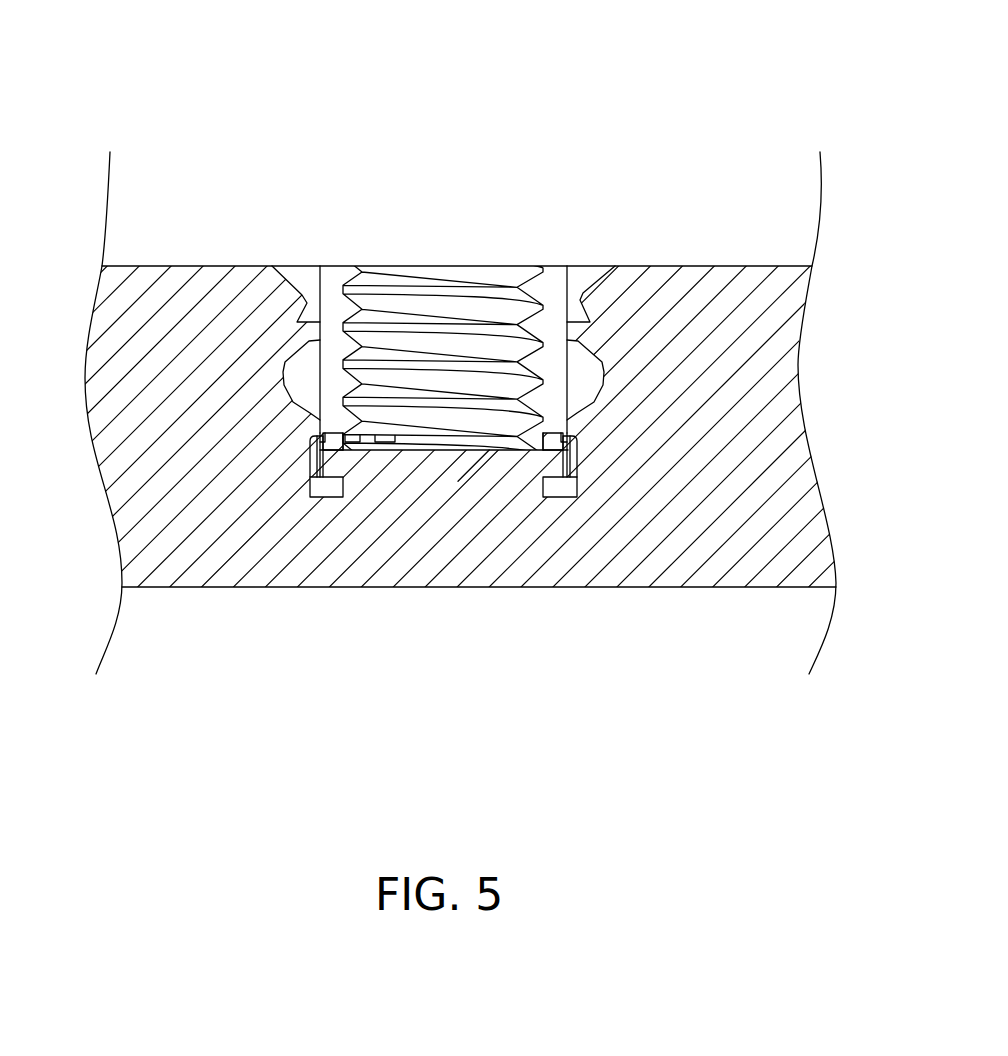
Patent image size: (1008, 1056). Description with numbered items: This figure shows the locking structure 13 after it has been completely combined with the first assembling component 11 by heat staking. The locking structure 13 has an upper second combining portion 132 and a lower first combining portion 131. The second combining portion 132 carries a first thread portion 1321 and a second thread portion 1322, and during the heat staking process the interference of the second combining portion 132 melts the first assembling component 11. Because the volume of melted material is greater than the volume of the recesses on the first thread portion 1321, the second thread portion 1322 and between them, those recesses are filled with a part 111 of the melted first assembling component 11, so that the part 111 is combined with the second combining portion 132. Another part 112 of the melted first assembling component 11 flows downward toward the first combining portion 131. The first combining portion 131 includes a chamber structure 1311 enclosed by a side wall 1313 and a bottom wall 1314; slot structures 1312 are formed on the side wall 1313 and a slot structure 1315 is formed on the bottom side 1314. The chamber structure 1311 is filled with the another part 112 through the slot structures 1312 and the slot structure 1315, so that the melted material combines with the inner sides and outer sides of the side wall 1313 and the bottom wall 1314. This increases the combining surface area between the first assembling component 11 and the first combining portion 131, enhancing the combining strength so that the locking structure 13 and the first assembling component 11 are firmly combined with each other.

The first assembling component 11 is at (658, 532).
The part of the melted first assembling component 111 is at (303, 342).
The another part of the melted first assembling component 112 is at (376, 462).
The locking structure 13 is at (562, 99).
The first combining portion 131 is at (277, 468).
The chamber structure 1311 is at (414, 500).
The slot structures 1312 is at (620, 465).
The side wall 1313 is at (580, 432).
The bottom wall 1314 is at (552, 490).
The slot structure 1315 is at (465, 528).
The second combining portion 132 is at (692, 192).
The first thread portion 1321 is at (577, 283).
The second thread portion 1322 is at (637, 333).